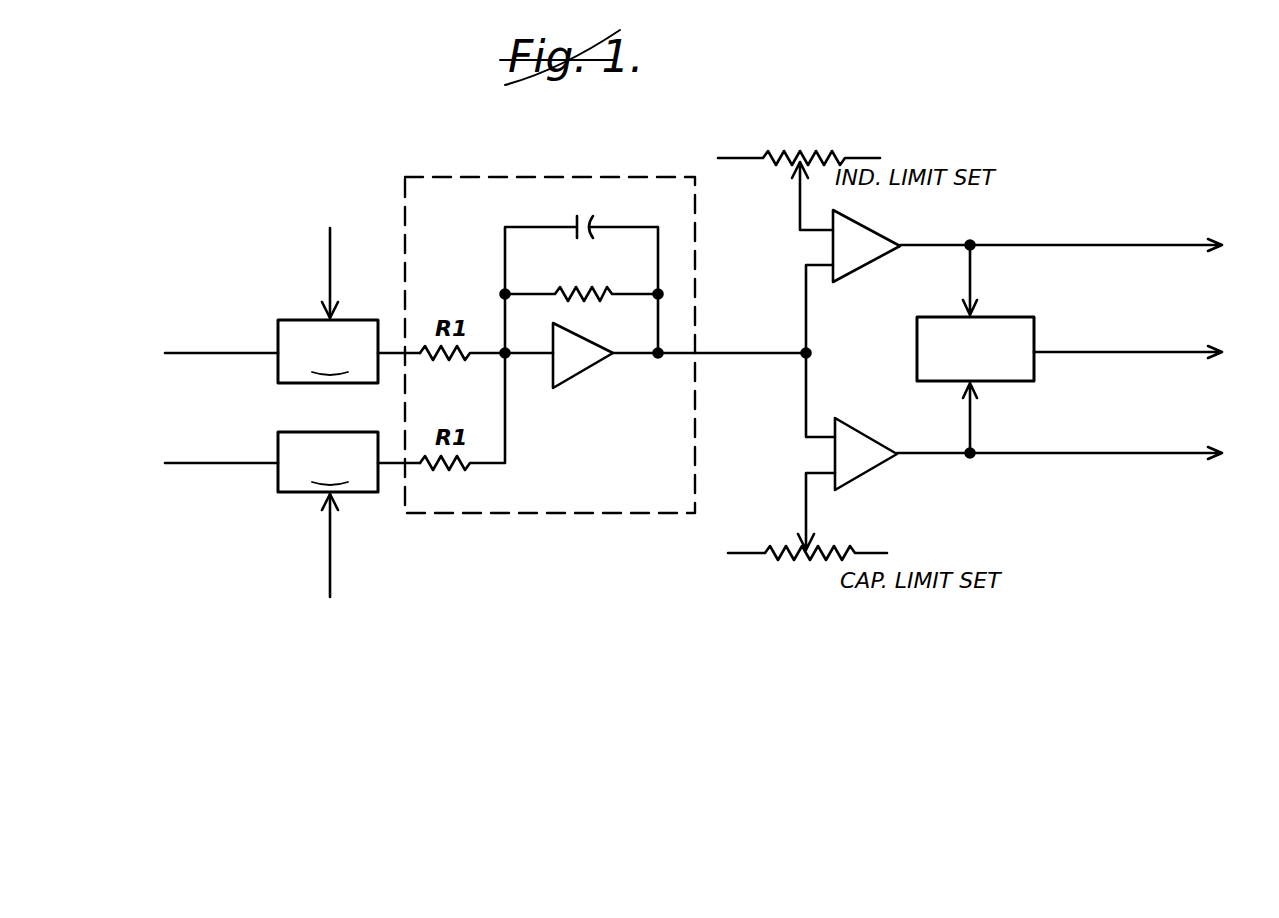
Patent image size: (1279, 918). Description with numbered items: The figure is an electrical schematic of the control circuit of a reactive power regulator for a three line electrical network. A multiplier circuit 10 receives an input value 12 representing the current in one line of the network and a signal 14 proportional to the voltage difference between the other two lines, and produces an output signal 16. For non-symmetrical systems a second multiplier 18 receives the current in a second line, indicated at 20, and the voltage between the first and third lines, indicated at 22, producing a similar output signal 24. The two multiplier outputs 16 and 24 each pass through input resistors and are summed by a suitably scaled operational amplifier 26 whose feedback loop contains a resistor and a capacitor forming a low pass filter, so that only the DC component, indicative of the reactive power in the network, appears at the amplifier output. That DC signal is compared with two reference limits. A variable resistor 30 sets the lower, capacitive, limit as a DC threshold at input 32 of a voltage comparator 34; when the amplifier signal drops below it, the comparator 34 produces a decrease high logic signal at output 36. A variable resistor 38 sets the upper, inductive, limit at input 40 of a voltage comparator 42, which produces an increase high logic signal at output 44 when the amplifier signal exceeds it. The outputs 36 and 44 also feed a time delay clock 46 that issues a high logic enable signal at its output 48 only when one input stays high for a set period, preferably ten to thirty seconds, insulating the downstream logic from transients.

The multiplier circuit 10 is at (328, 351).
The input value 12 is at (238, 352).
The signal 14 is at (329, 262).
The output signal 16 is at (385, 370).
The second multiplier 18 is at (328, 462).
The current I2 20 is at (233, 462).
The voltage V1-3 22 is at (329, 540).
The output signal 24 is at (388, 468).
The operational amplifier 26 is at (582, 362).
The variable resistor 30 is at (762, 558).
The input 32 is at (805, 493).
The voltage comparator 34 is at (858, 448).
The output 36 is at (1008, 458).
The variable resistor 38 is at (768, 158).
The input 40 is at (800, 235).
The voltage comparator 42 is at (855, 242).
The output 44 is at (1006, 246).
The time delay clock 46 is at (917, 335).
The output 48 is at (1098, 355).